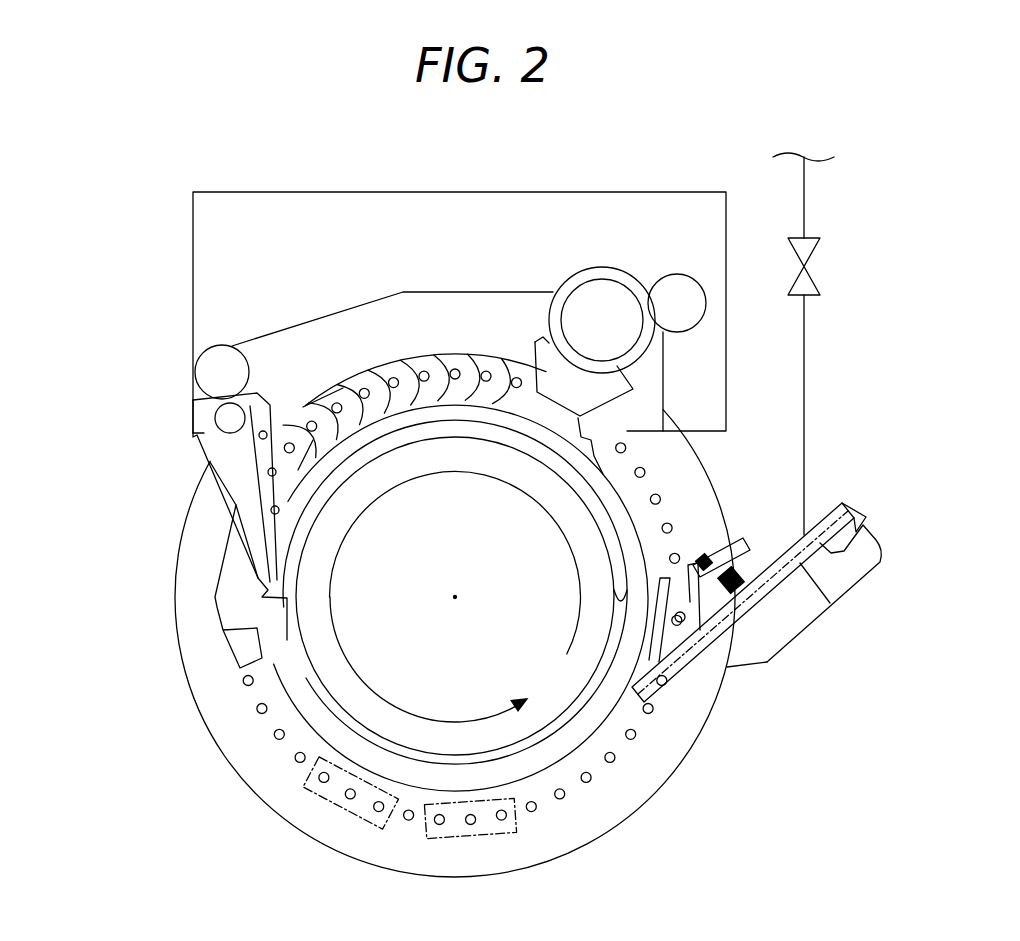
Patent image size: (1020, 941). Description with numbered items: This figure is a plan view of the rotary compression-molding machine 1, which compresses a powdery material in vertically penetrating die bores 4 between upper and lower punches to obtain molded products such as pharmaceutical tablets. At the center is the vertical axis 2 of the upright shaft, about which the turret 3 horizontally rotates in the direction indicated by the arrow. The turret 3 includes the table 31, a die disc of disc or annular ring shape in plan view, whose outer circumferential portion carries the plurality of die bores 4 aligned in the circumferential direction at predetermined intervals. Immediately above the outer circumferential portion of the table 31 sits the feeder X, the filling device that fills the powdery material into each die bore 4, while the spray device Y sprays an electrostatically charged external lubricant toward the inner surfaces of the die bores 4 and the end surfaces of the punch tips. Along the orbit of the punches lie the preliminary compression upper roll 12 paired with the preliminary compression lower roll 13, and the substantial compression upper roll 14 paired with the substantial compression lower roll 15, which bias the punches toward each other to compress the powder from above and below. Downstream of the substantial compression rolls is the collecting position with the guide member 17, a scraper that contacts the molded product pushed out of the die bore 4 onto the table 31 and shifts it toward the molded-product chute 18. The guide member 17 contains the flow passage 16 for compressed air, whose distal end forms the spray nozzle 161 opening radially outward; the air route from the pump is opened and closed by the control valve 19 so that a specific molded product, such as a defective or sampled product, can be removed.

The molding machine 1 is at (120, 601).
The vertical axis 2 is at (458, 597).
The turret 3 is at (420, 572).
The die bore 4 is at (258, 714).
The preliminary compression upper roll 12 is at (347, 813).
The preliminary compression lower roll 13 is at (334, 832).
The substantial compression upper roll 14 is at (475, 836).
The substantial compression lower roll 15 is at (472, 863).
The flow passage 16 is at (688, 660).
The spray nozzle 161 is at (648, 712).
The guide member 17 is at (727, 626).
The molded-product chute 18 is at (858, 588).
The control valve 19 is at (806, 266).
The table 31 is at (570, 858).
The feeder X is at (419, 288).
The spray device Y is at (664, 568).